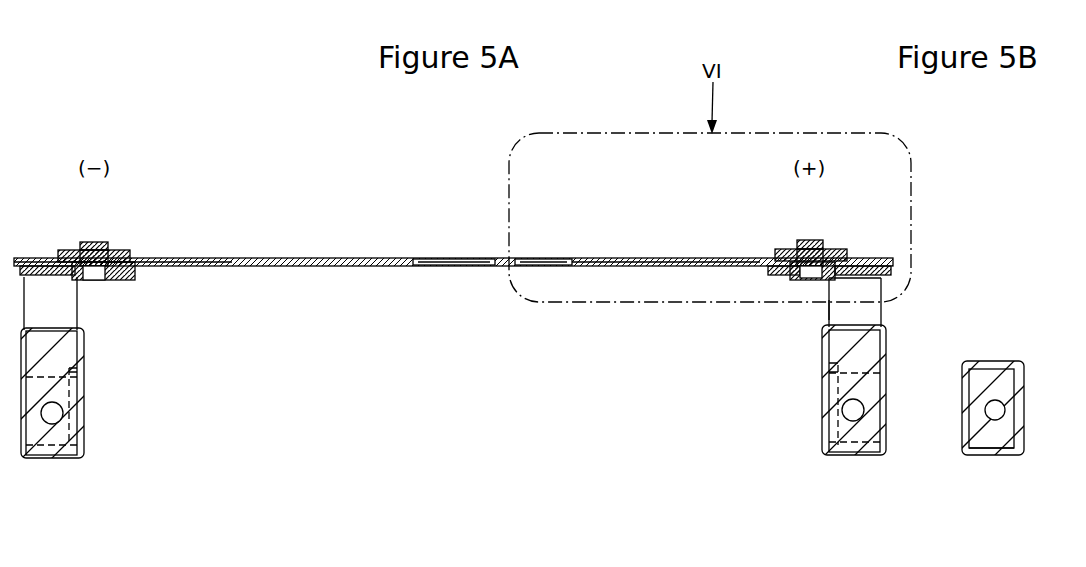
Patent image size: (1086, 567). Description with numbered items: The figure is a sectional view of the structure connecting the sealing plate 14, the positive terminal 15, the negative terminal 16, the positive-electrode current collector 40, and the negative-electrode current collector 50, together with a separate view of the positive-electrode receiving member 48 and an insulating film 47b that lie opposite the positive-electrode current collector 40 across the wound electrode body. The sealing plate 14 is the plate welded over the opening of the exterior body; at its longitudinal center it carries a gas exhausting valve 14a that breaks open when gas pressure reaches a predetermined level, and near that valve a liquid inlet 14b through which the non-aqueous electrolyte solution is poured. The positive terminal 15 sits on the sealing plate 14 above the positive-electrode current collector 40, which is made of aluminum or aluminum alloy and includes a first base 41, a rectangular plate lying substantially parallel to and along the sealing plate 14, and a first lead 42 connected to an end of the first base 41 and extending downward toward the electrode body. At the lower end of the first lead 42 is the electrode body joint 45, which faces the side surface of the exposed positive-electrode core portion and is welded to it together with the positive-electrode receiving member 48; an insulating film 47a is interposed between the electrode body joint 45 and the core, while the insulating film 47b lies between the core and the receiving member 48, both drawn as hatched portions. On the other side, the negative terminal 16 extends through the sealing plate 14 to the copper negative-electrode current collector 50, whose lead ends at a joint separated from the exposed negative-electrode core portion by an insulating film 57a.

In FIG. 5A, the sealing plate 14 is at (301, 257).
In FIG. 5A, the gas exhausting valve 14a is at (448, 266).
In FIG. 5A, the liquid inlet 14b is at (545, 258).
In FIG. 5A, the positive terminal 15 is at (810, 239).
In FIG. 5A, the negative terminal 16 is at (94, 241).
In FIG. 5A, the positive-electrode current collector 40 is at (887, 312).
In FIG. 5A, the first base 41 is at (853, 280).
In FIG. 5A, the first lead 42 is at (829, 313).
In FIG. 5A, the electrode body joint 45 is at (886, 412).
In FIG. 5A, the insulating film 47a is at (822, 412).
In FIG. 5B, the insulating film 47b is at (990, 456).
In FIG. 5B, the positive-electrode receiving member 48 is at (993, 385).
In FIG. 5A, the negative-electrode current collector 50 is at (78, 311).
In FIG. 5A, the insulating film 57a is at (84, 410).